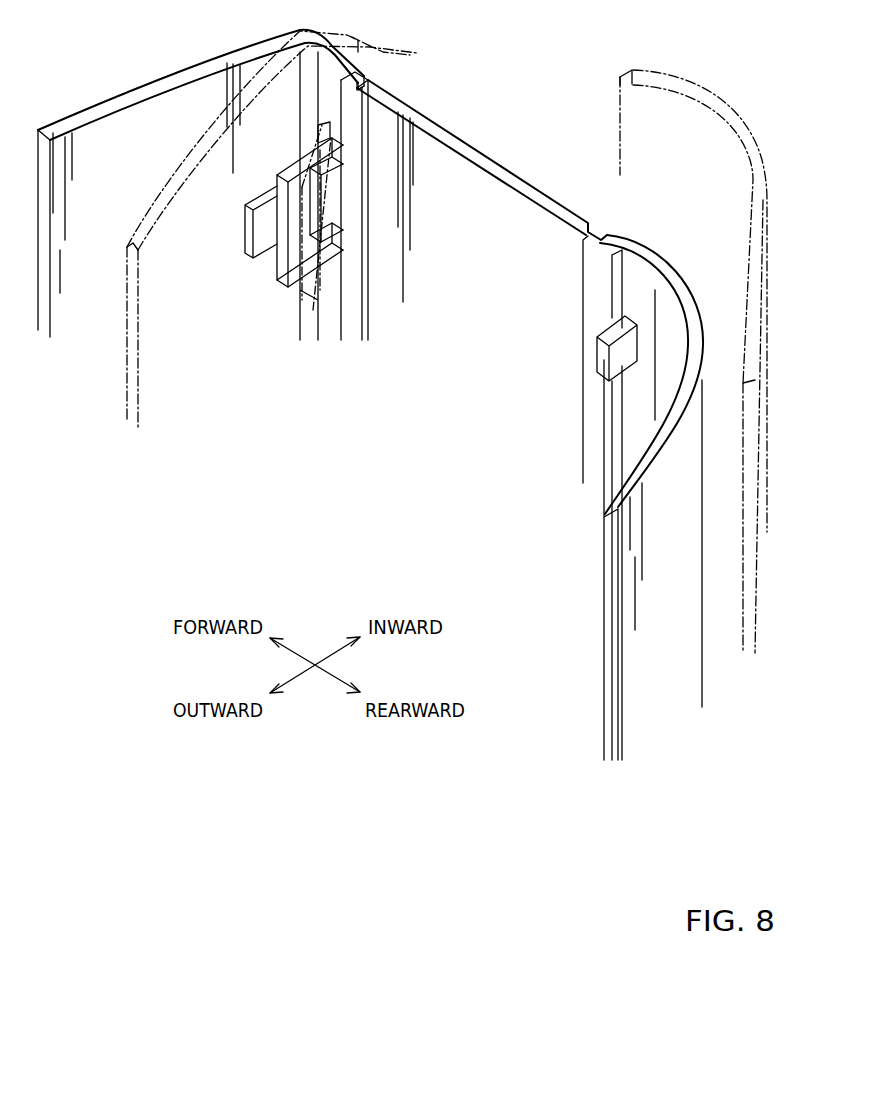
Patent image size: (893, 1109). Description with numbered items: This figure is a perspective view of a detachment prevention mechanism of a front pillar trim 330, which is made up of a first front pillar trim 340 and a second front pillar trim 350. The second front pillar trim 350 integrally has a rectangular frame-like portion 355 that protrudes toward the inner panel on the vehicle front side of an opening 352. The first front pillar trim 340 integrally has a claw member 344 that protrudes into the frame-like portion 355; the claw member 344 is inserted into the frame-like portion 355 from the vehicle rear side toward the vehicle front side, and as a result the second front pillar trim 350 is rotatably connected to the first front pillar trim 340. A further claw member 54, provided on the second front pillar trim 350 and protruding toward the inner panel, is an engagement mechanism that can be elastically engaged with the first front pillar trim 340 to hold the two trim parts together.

The front pillar trim 330 is at (402, 387).
The first front pillar trim 340 is at (472, 150).
The claw member 344 is at (255, 240).
The second front pillar trim 350 is at (162, 190).
The opening 352 is at (367, 80).
The frame-like portion 355 is at (307, 267).
The claw member 54 is at (610, 355).